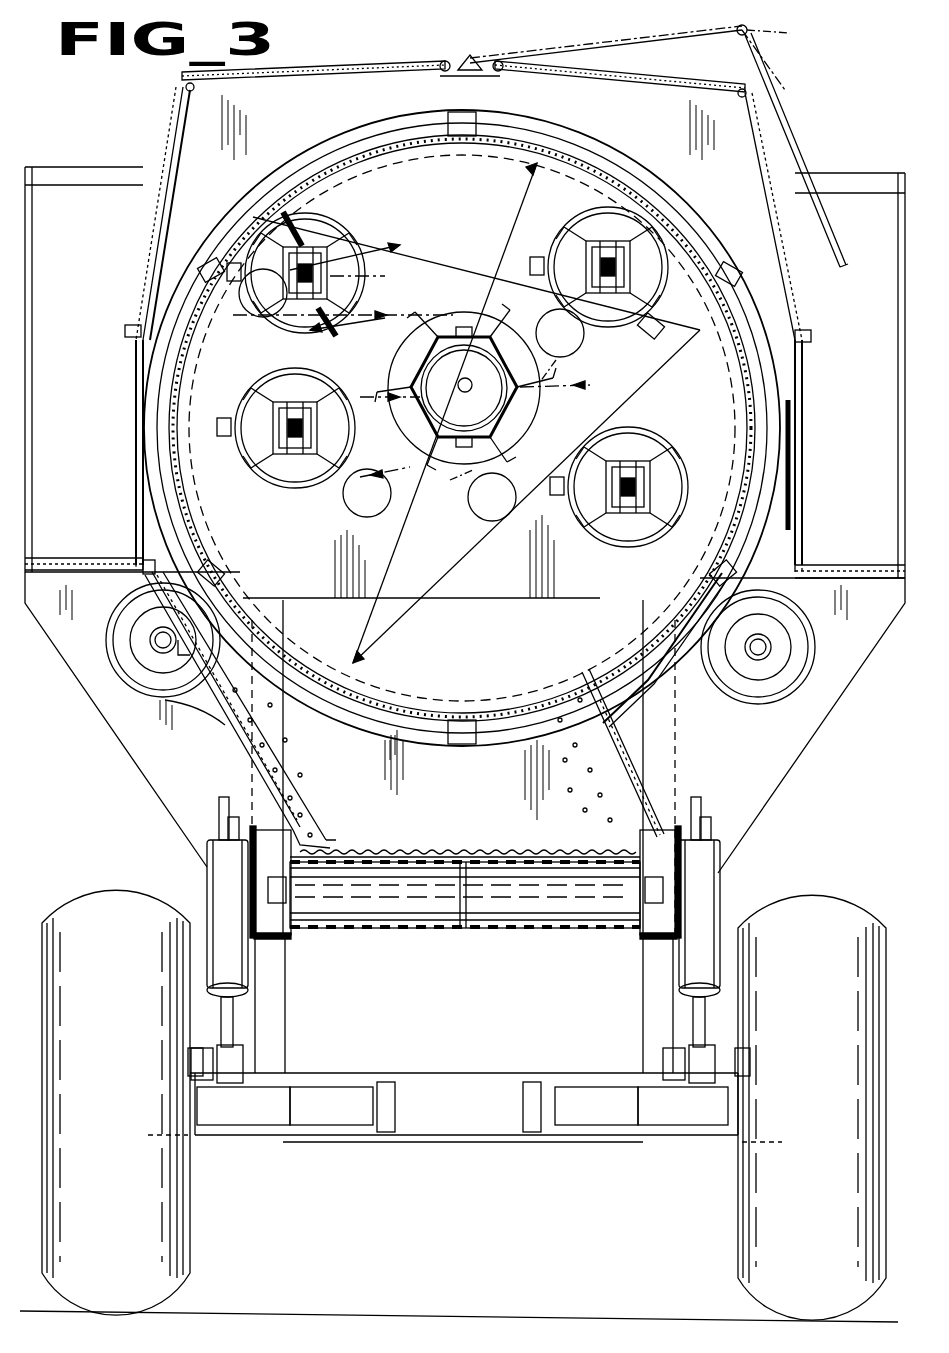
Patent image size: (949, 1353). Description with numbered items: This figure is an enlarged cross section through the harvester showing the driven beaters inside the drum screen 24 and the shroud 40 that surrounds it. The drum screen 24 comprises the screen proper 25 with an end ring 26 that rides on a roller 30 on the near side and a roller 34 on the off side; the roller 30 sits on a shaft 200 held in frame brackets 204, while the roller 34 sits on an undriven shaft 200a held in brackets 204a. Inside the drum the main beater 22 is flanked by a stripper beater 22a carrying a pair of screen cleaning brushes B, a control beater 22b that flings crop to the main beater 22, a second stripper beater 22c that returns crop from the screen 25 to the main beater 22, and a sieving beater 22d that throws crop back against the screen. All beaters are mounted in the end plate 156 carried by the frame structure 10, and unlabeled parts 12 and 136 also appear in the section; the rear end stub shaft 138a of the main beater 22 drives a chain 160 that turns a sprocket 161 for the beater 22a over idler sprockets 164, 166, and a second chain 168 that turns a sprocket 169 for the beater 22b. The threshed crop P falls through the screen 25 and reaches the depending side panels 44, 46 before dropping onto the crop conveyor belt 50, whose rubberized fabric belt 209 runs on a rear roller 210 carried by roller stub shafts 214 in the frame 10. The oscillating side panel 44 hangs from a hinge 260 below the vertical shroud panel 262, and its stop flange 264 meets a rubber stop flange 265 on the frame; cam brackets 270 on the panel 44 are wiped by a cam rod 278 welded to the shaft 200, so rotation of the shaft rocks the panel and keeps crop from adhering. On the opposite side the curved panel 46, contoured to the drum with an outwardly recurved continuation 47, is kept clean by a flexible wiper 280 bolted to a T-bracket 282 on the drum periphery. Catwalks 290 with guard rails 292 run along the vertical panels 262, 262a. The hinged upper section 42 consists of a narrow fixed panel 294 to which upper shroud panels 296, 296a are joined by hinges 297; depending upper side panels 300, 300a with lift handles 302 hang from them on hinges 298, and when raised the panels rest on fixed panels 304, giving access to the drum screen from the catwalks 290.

The frame structure 10 is at (300, 972).
The hydraulic cylinder 12 is at (200, 870).
The main beater 22 is at (570, 384).
The stripper beater 22a is at (340, 222).
The control beater 22b is at (272, 474).
The stripper beater 22c is at (648, 305).
The sieving beater 22d is at (678, 436).
The drum screen 24 is at (595, 138).
The screen proper 25 is at (438, 132).
The end ring 26 is at (348, 142).
The roller 30 is at (140, 602).
The roller 34 is at (790, 680).
The shroud 40 is at (170, 112).
The hinged panel upper section 42 is at (178, 135).
The oscillating side panel 44 is at (250, 755).
The curved side panel 46 is at (655, 712).
The continuation 47 is at (615, 740).
The crop conveyor belt 50 is at (610, 848).
The hub ring 136 is at (430, 430).
The rear end stub shaft 138a is at (486, 398).
The end plate 156 is at (476, 408).
The chain 160 is at (382, 240).
The sprocket 161 is at (374, 267).
The idler sprocket 164 is at (556, 360).
The idler sprocket 166 is at (450, 480).
The chain 168 is at (431, 501).
The sprocket 169 is at (412, 400).
The shaft 200 is at (160, 648).
The shaft 200a is at (790, 676).
The frame bracket 204 is at (128, 738).
The bracket 204a is at (780, 762).
The rubberized fabric belt 209 is at (378, 922).
The rear roller 210 is at (530, 915).
The roller stub shaft 214 is at (268, 890).
The hinge 260 is at (143, 565).
The vertical shroud panel 262 is at (135, 438).
The vertical shroud panel 262a is at (792, 424).
The stop flange 264 is at (310, 870).
The rubber stop flange 265 is at (285, 835).
The cam bracket 270 is at (165, 703).
The cam rod 278 is at (150, 636).
The flexible wiper 280 is at (710, 570).
The T-bracket 282 is at (712, 582).
The catwalk 290 is at (50, 560).
The guard rail 292 is at (30, 284).
The fixed panel 294 is at (470, 55).
The upper shroud panel 296 is at (200, 74).
The upper shroud panel 296a is at (640, 78).
The hinge 297 is at (440, 62).
The hinge 298 is at (178, 84).
The depending upper side panel 300 is at (162, 222).
The depending upper side panel 300a is at (775, 110).
The lift handle 302 is at (125, 328).
The fixed panel 304 is at (470, 83).
The threshed crop P is at (690, 610).
The screen cleaning brush B is at (341, 268).